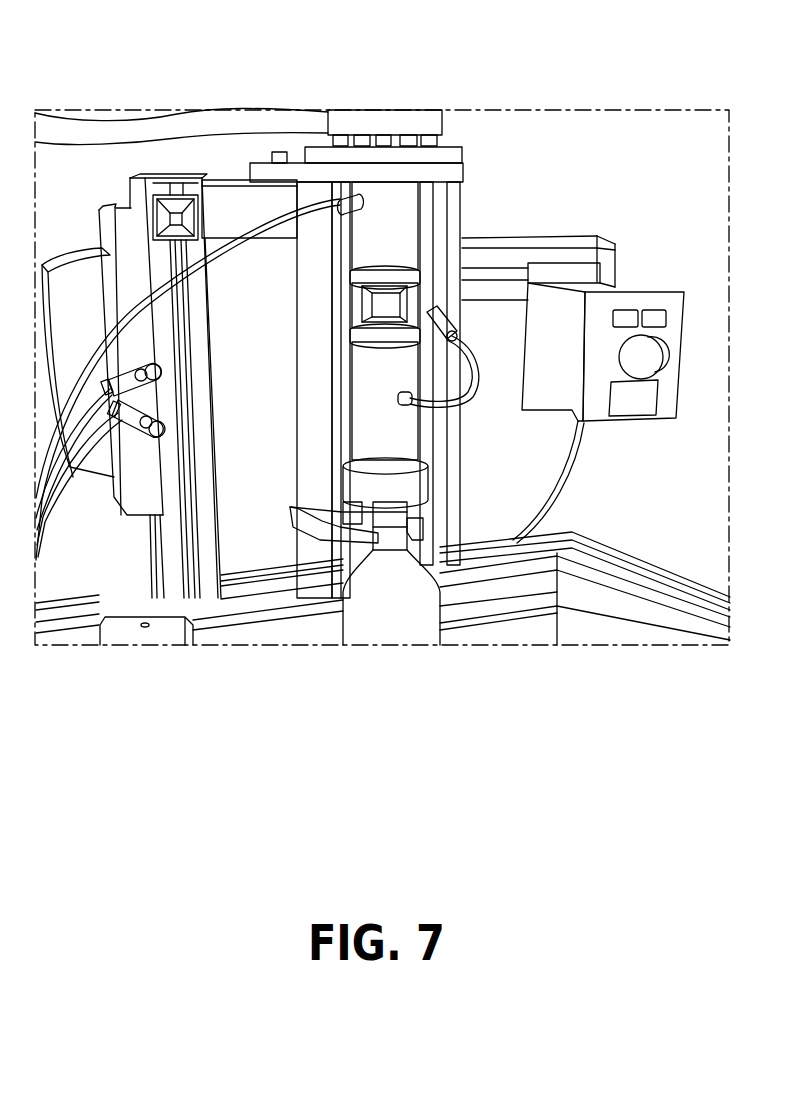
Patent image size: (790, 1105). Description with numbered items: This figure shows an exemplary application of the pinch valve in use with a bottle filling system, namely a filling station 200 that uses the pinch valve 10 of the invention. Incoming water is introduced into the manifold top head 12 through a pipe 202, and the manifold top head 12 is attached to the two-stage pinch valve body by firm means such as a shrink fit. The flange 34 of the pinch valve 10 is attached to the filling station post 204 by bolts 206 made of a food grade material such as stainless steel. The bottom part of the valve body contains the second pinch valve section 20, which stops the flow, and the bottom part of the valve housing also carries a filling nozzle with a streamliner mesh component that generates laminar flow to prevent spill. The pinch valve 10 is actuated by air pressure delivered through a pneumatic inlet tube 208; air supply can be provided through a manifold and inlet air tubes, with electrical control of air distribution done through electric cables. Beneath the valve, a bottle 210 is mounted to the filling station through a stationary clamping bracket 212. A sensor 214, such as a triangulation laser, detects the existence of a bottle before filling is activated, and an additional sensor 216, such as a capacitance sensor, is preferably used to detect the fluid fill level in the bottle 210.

The filling station 200 is at (419, 100).
The pipe 202 is at (183, 130).
The manifold top head 12 is at (328, 122).
The bolts 206 is at (360, 140).
The flange 34 is at (463, 155).
The pinch valve 10 is at (413, 242).
The pneumatic inlet tube 208 is at (243, 247).
The filling station post 204 is at (310, 383).
The second pinch valve section 20 is at (412, 445).
The stationary clamping bracket 212 is at (423, 530).
The sensor 214 is at (350, 512).
The additional sensor 216 is at (345, 560).
The bottle 210 is at (398, 624).